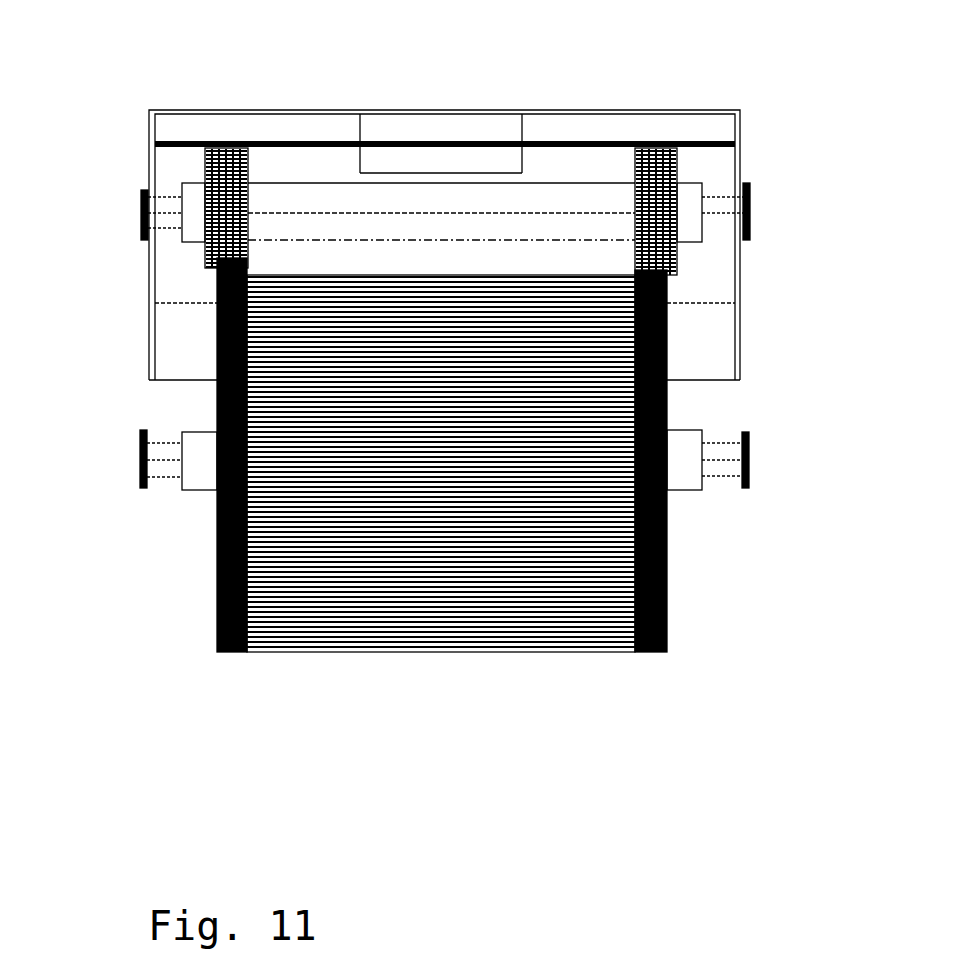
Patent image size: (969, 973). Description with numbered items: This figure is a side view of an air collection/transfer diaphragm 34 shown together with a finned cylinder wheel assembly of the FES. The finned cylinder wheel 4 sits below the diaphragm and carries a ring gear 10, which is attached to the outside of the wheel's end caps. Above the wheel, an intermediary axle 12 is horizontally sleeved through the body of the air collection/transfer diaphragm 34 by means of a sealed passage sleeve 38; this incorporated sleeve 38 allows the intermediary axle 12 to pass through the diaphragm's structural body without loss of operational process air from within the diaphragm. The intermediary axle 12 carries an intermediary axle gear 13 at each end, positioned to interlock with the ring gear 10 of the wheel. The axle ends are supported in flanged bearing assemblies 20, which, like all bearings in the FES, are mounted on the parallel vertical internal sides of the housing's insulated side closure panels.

The finned cylinder wheel 4 is at (667, 407).
The ring gear 10 is at (667, 553).
The intermediary axle 12 is at (723, 197).
The intermediary axle gear 13 is at (227, 148).
The flanged bearing assembly 20 is at (140, 211).
The air collection/transfer diaphragm 34 is at (176, 278).
The sealed passage sleeve 38 is at (443, 155).